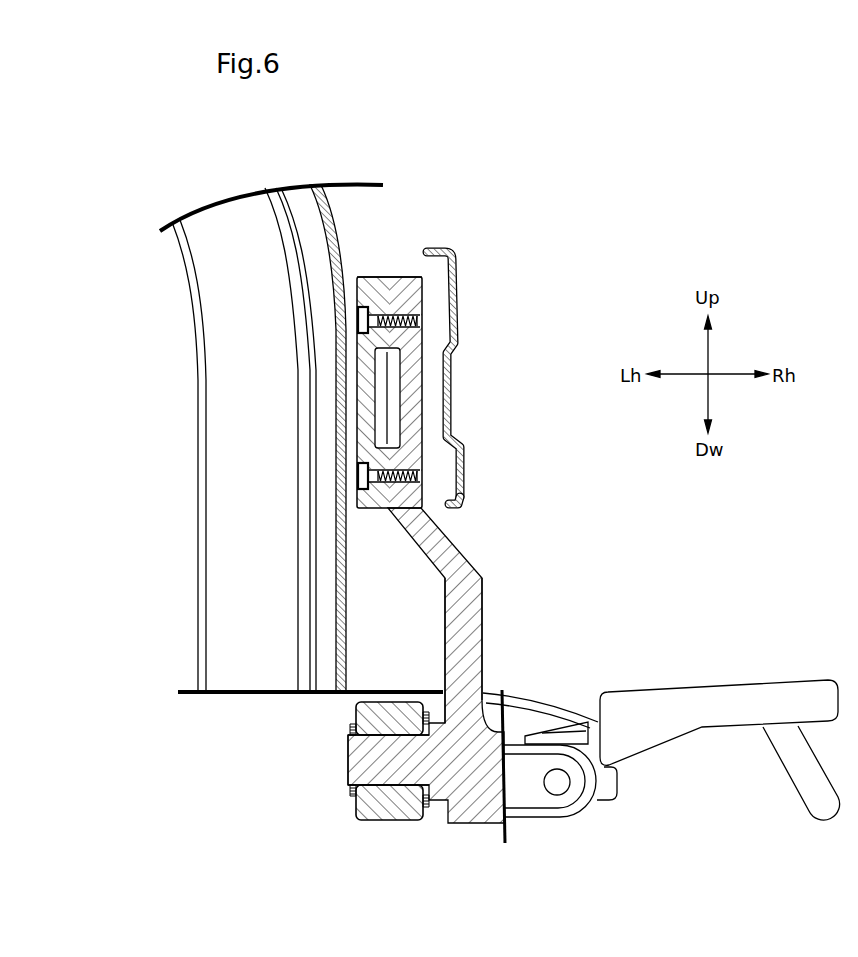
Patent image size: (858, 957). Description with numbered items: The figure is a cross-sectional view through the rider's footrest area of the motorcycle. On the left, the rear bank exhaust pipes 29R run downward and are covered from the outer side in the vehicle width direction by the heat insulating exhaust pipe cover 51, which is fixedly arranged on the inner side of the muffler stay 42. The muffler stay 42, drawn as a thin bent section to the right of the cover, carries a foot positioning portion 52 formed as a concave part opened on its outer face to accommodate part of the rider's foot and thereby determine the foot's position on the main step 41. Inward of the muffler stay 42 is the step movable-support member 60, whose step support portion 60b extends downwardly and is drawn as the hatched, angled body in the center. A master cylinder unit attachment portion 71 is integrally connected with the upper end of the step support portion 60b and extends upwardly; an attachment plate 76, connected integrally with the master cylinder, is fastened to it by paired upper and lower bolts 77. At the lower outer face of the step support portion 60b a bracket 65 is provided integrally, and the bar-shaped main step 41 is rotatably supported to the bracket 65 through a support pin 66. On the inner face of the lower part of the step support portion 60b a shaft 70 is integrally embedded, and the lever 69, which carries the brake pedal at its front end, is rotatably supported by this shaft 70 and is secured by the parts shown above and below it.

The rear bank exhaust pipes 29R is at (223, 503).
The heat insulating exhaust pipe cover 51 is at (343, 254).
The foot positioning portion 52 is at (459, 437).
The muffler stay 42 is at (465, 498).
The step movable-support member 60 is at (482, 570).
The step support portion 60b is at (468, 642).
The shaft 70 is at (358, 757).
The lever 69 is at (384, 806).
The master cylinder unit attachment portion 71 is at (413, 388).
The attachment plate 76 is at (378, 281).
The bolts 77 is at (361, 322).
The bracket 65 is at (577, 802).
The support pin 66 is at (559, 792).
The main step 41 is at (722, 697).